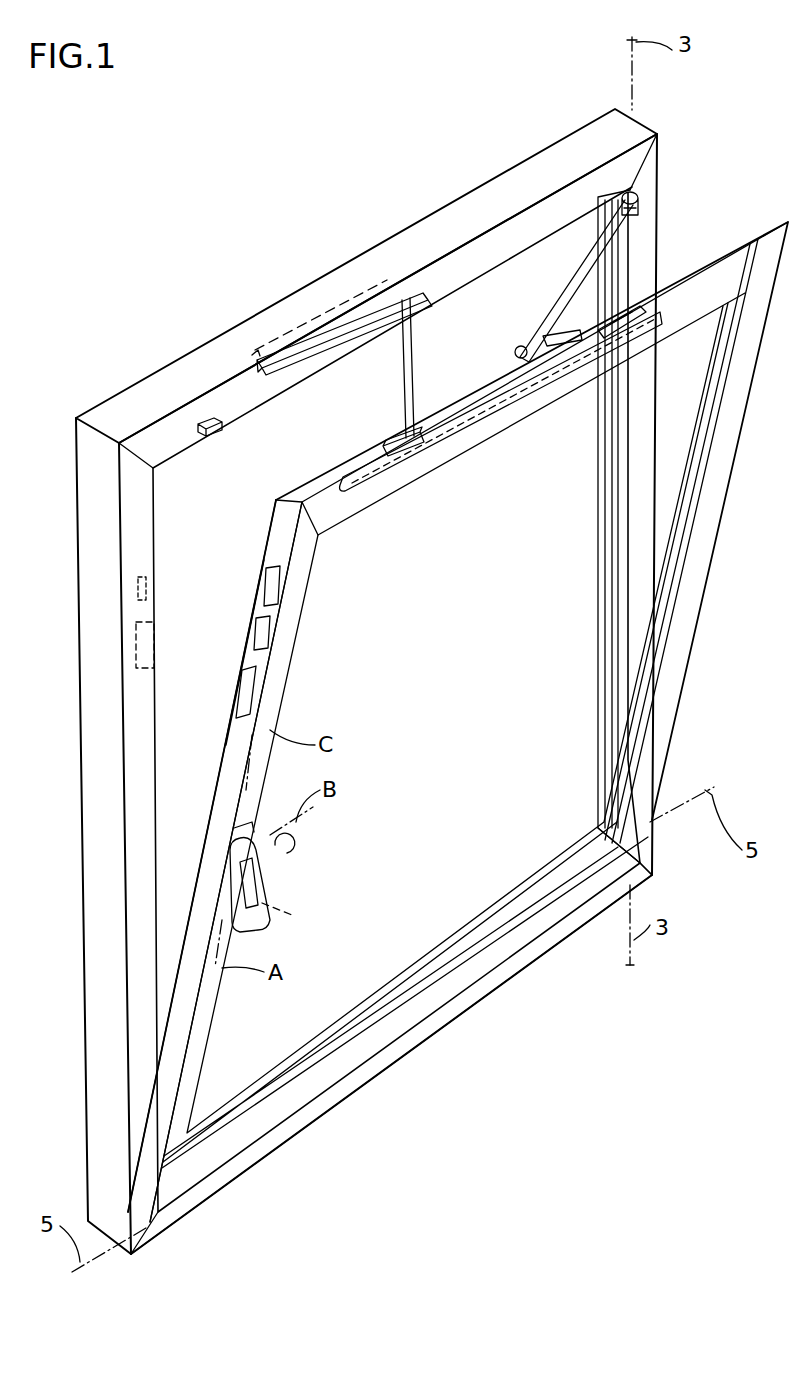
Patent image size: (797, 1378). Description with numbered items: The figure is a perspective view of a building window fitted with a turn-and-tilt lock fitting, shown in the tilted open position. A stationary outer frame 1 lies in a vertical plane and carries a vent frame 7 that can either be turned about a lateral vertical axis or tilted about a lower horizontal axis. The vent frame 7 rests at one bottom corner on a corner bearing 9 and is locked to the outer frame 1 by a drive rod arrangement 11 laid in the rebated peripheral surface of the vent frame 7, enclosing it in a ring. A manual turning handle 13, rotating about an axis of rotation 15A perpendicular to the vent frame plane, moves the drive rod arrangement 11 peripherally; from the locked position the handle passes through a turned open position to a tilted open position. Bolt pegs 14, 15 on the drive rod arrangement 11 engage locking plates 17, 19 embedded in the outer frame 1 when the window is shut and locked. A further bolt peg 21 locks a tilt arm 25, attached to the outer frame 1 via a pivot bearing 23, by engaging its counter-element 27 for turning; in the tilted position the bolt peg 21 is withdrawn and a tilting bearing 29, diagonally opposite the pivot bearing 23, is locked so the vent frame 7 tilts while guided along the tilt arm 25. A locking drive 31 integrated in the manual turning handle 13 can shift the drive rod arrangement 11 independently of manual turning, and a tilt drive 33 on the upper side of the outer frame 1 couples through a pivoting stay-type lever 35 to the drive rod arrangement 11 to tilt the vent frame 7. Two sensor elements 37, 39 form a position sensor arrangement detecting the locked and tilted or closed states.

The stationary outer frame 1 is at (332, 258).
The vent frame 7 is at (712, 590).
The corner bearing 9 is at (650, 856).
The drive rod arrangement 11 is at (234, 780).
The manual turning handle 13 is at (258, 927).
The bolt peg 14 is at (238, 712).
The bolt peg 15 is at (345, 480).
The axis of rotation 15A is at (290, 880).
The locking plate 17 is at (135, 652).
The locking plate 19 is at (208, 420).
The bolt peg 21 is at (628, 316).
The pivot bearing 23 is at (640, 198).
The tilt arm 25 is at (595, 296).
The counter-element 27 is at (622, 255).
The tilting bearing 29 is at (196, 1202).
The locking drive 31 is at (292, 912).
The tilt drive 33 is at (385, 285).
The stay-type lever 35 is at (410, 365).
The sensor element 37 is at (264, 580).
The sensor element 39 is at (136, 586).